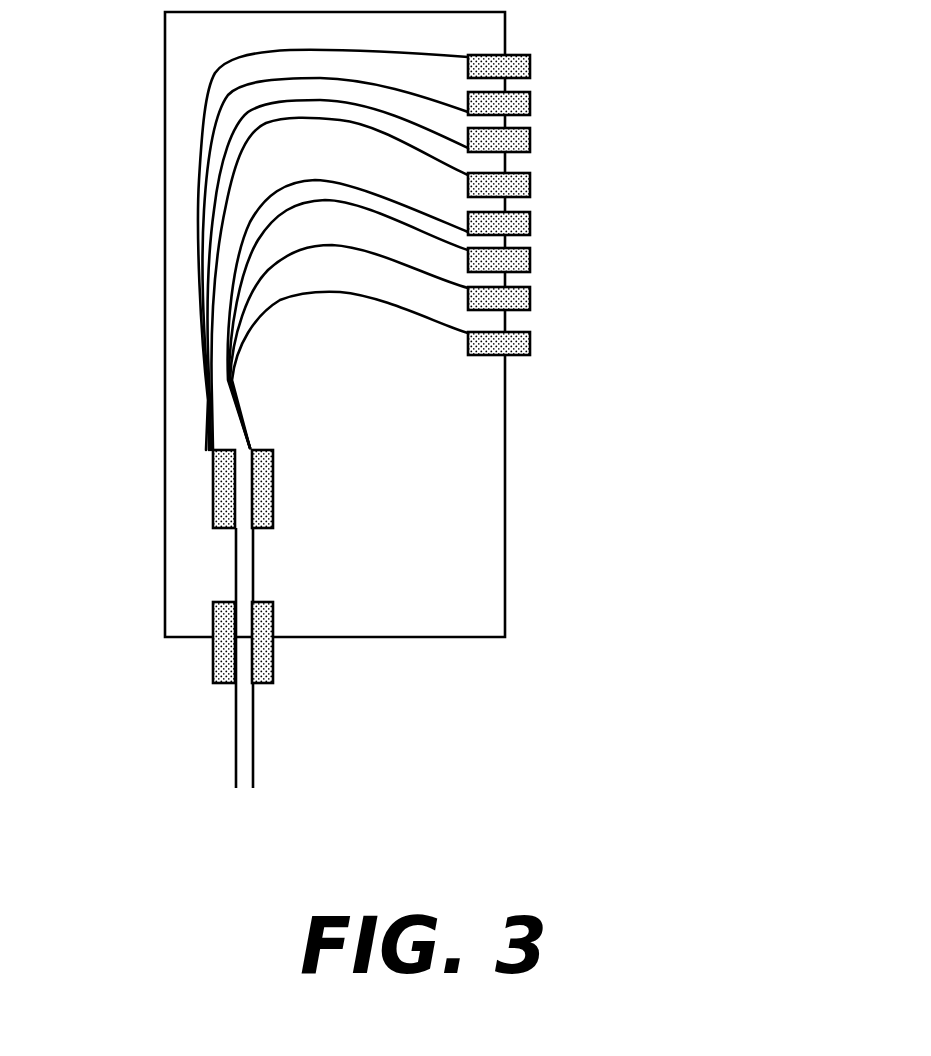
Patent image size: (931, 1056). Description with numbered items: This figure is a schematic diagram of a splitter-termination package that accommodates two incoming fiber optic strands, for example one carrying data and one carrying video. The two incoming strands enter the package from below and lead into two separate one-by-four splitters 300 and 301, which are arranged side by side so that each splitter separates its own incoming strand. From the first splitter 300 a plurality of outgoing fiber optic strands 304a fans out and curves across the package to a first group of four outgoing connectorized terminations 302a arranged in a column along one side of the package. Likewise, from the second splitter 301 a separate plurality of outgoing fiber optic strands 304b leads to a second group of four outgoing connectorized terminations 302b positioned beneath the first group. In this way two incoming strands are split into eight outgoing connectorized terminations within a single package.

The 1×4 splitter 300 is at (213, 490).
The 1×4 splitter 301 is at (273, 488).
The outgoing connectorized terminations 302a is at (548, 50).
The outgoing connectorized terminations 302b is at (548, 210).
The plurality of outgoing fiber optic strands 304a is at (207, 418).
The plurality of outgoing fiber optic strands 304b is at (242, 422).